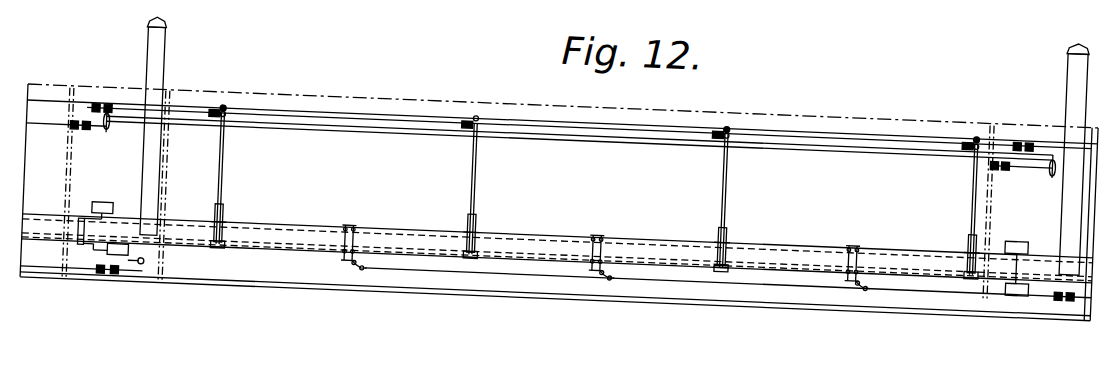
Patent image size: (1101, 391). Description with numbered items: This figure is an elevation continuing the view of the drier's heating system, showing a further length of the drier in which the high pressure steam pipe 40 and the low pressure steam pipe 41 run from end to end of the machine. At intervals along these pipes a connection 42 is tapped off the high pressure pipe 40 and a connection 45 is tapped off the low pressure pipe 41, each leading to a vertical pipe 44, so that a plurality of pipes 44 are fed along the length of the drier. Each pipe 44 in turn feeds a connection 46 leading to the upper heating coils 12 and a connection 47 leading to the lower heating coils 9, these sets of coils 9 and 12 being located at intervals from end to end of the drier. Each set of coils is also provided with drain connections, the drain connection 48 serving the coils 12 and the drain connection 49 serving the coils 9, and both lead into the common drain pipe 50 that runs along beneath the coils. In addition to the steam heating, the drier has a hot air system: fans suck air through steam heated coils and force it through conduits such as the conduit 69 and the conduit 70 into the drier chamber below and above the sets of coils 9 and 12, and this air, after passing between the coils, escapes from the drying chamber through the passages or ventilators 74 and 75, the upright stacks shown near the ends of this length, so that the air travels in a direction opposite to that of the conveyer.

The heating coils 9 is at (277, 250).
The heating coils 12 is at (290, 218).
The high pressure steam pipe 40 is at (284, 102).
The low pressure steam pipe 41 is at (367, 117).
The connection 42 is at (224, 97).
The pipe 44 is at (229, 187).
The connection 45 is at (216, 108).
The connection 46 is at (220, 208).
The connection 47 is at (221, 240).
The drain connection 48 is at (351, 212).
The drain connection 49 is at (362, 250).
The common drain pipe 50 is at (458, 256).
The conduit 69 is at (105, 199).
The conduit 70 is at (1032, 208).
The ventilator 74 is at (146, 142).
The ventilator 75 is at (1066, 143).